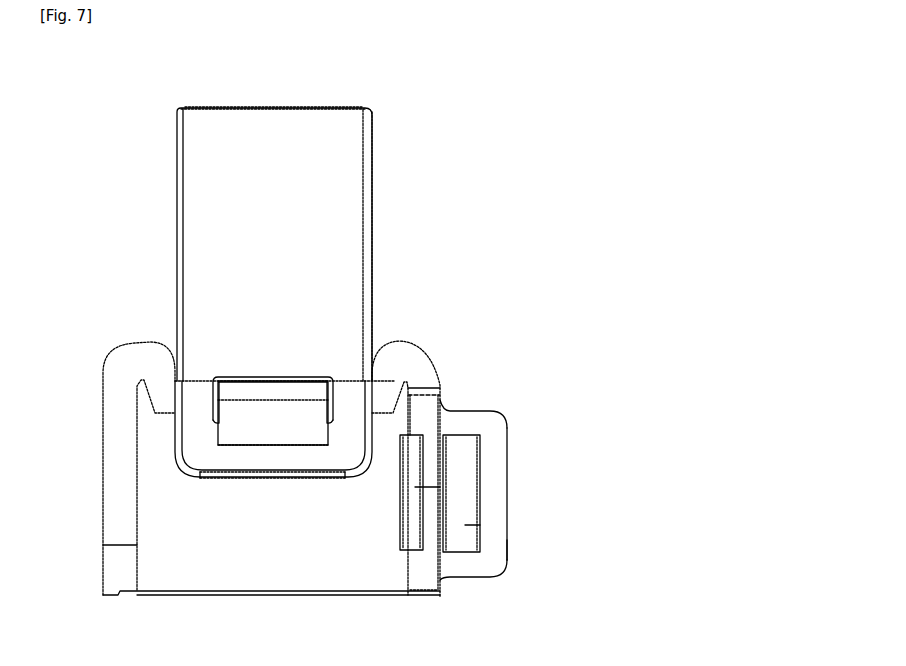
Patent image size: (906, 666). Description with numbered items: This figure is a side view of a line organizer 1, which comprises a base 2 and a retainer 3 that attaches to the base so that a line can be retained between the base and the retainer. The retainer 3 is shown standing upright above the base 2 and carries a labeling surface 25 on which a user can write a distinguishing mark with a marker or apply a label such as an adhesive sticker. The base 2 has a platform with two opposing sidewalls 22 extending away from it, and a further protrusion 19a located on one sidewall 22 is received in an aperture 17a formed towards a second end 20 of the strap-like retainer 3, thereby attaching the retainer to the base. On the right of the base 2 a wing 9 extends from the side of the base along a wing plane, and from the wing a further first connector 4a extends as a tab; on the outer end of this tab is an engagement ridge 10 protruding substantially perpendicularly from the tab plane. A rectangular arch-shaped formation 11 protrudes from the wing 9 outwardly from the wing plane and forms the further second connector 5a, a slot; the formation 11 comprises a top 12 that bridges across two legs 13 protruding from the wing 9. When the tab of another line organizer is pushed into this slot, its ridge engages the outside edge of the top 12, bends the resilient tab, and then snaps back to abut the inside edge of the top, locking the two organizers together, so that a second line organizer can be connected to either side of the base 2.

The line organizer 1 is at (523, 280).
The base 2 is at (355, 594).
The retainer 3 is at (374, 178).
The further first connector 4a is at (440, 487).
The further second connector 5a is at (480, 525).
The wing 9 is at (423, 415).
The engagement ridge 10 is at (392, 520).
The rectangular arch-shaped formation 11 is at (508, 545).
The top 12 is at (510, 448).
The legs 13 is at (467, 423).
The aperture 17a is at (242, 392).
The further protrusion 19a is at (245, 428).
The second end 20 is at (272, 478).
The sidewalls 22 is at (285, 455).
The labeling surface 25 is at (209, 107).